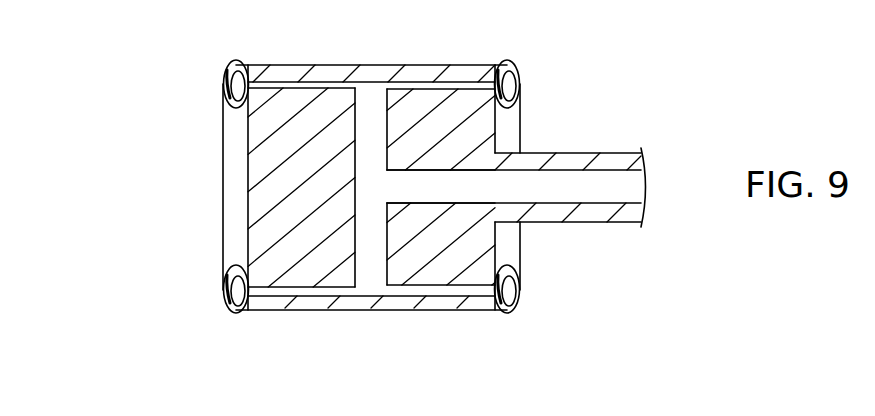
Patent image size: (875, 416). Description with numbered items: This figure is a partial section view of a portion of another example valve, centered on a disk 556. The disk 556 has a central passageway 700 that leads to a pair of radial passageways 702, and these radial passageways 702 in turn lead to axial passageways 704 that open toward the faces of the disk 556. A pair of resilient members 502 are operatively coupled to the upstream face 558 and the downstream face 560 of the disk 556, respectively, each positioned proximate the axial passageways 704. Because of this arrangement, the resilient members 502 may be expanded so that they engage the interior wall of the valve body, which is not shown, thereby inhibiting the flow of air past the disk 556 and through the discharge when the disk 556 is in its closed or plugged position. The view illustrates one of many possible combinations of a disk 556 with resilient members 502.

The resilient member 502 is at (520, 116).
The disk 556 is at (281, 56).
The upstream face 558 is at (247, 235).
The downstream face 560 is at (495, 262).
The central passageway 700 is at (465, 198).
The radial passageway 702 is at (373, 142).
The axial passageway 704 is at (405, 82).